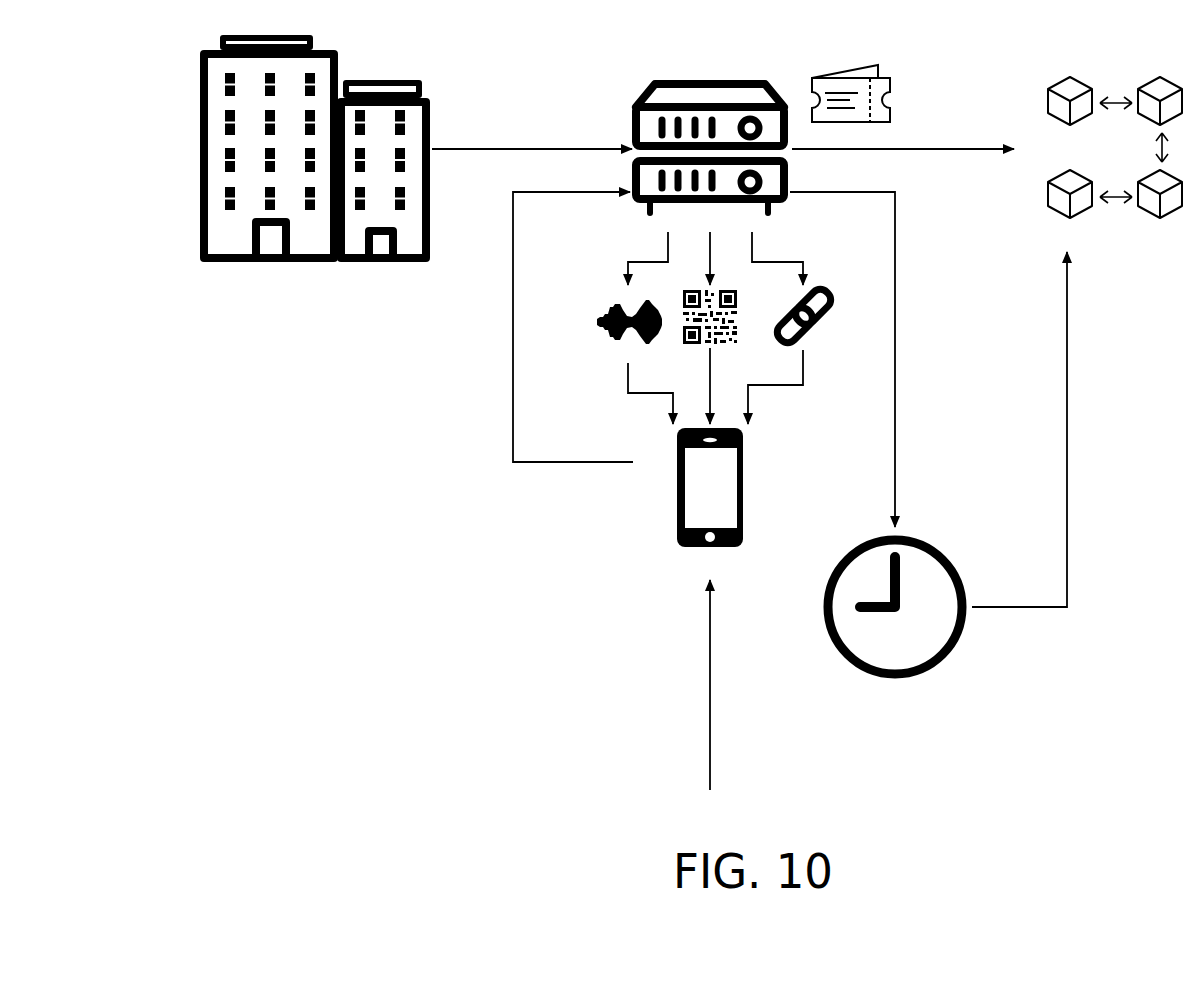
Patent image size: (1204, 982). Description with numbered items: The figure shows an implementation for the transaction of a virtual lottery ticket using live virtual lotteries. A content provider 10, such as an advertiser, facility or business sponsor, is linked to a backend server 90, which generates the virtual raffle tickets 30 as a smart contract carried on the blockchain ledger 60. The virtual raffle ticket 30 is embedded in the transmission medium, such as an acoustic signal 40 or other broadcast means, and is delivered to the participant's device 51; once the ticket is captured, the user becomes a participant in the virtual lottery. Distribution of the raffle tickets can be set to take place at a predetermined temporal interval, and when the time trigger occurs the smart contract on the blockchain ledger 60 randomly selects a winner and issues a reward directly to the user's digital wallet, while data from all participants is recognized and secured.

The content provider 10 is at (289, 150).
The backend server 90 is at (686, 148).
The virtual raffle ticket 30 is at (874, 93).
The blockchain ledger 60 is at (1115, 147).
The acoustic signal 40 is at (727, 323).
The user terminal (smartphone) 51 is at (732, 487).